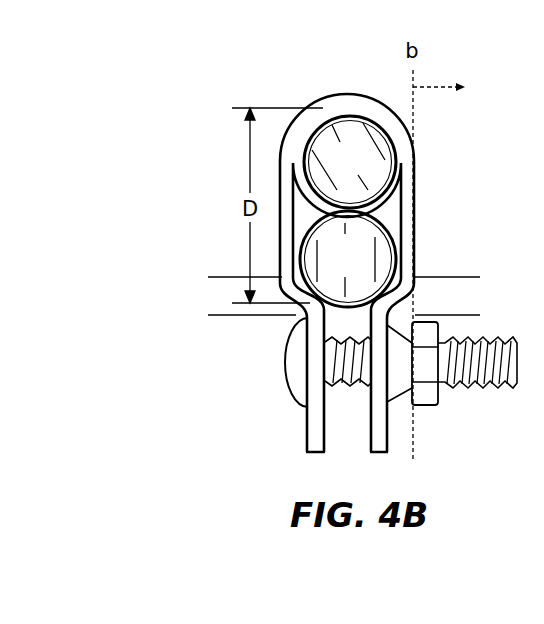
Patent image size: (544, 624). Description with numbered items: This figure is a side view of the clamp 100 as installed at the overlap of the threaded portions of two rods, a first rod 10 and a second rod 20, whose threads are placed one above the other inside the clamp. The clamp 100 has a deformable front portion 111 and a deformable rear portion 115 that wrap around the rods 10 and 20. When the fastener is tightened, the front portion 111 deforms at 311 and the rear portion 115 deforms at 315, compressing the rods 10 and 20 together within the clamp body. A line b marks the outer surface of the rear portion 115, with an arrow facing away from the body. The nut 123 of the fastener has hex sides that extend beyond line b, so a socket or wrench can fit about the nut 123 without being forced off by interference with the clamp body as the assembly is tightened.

The clamp 100 is at (247, 71).
The front portion 111 is at (279, 173).
The rear portion 115 is at (415, 173).
The first rod 10 is at (361, 167).
The second rod 20 is at (334, 269).
The nut 123 is at (436, 405).
The deformation location of front portion 311 is at (208, 277).
The deformation location of rear portion 315 is at (480, 277).